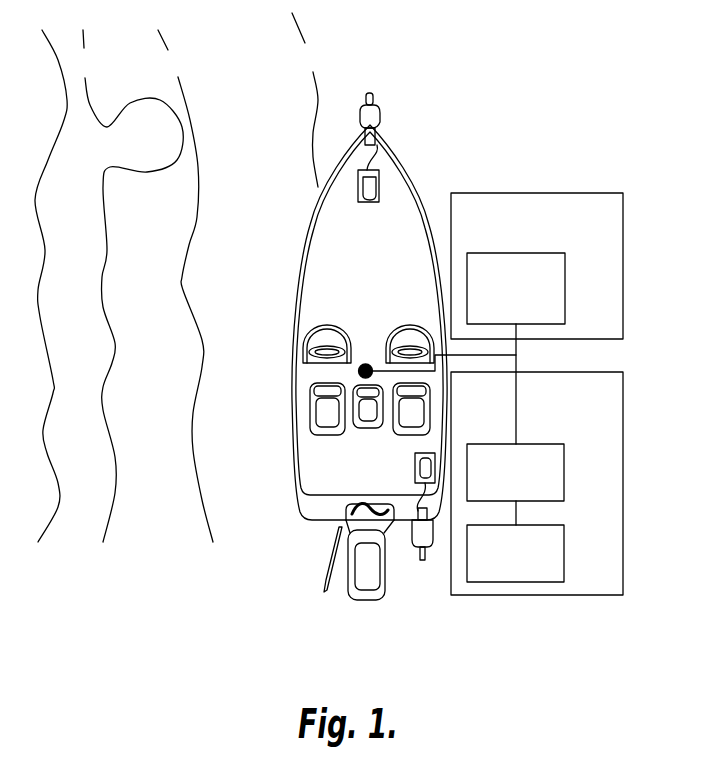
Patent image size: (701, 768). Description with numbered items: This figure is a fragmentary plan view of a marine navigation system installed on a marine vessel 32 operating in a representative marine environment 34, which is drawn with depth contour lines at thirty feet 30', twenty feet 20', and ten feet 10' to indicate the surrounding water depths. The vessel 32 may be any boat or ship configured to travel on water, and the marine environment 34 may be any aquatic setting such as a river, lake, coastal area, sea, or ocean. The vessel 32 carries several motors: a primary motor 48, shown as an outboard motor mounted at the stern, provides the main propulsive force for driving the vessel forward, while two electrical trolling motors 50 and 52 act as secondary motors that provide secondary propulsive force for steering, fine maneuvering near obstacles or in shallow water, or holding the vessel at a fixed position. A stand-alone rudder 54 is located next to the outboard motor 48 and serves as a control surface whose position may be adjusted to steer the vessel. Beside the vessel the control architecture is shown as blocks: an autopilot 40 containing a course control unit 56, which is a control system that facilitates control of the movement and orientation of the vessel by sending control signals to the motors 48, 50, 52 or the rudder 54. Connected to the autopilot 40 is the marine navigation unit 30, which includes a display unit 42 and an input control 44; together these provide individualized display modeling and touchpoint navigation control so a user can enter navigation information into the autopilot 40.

The ten-foot depth contour line 10' is at (130, 286).
The twenty-foot depth contour line 20' is at (185, 286).
The thirty-foot depth contour line 30' is at (305, 100).
The marine environment 34 is at (237, 115).
The marine vessel 32 is at (390, 167).
The electrical trolling motor 50 is at (365, 115).
The electrical trolling motor 52 is at (433, 542).
The primary motor 48 is at (383, 597).
The rudder 54 is at (328, 580).
The autopilot 40 is at (612, 193).
The course control unit 56 is at (565, 283).
The marine navigation unit 30 is at (550, 468).
The display unit 42 is at (565, 462).
The input control 44 is at (565, 548).